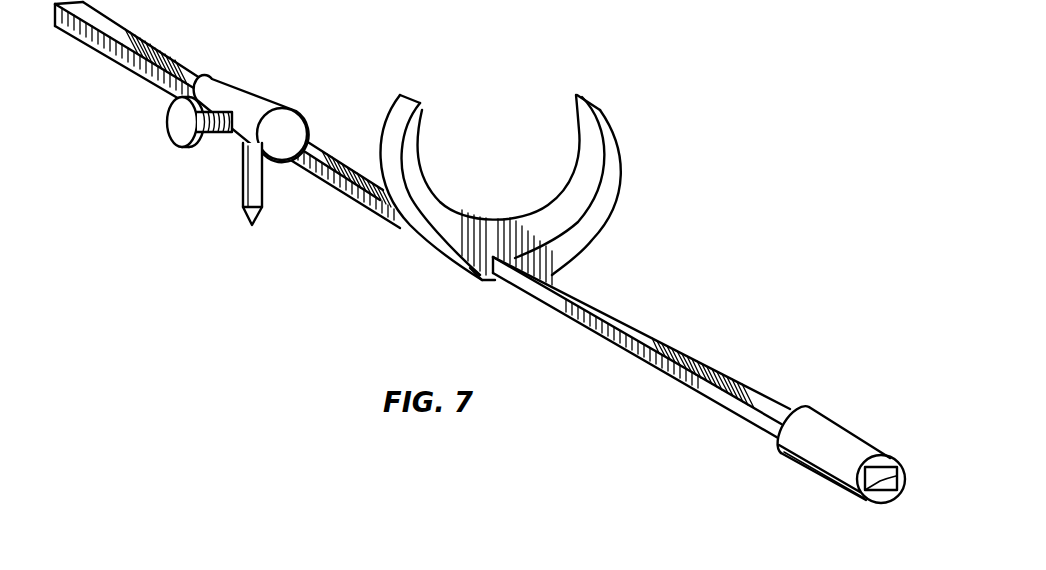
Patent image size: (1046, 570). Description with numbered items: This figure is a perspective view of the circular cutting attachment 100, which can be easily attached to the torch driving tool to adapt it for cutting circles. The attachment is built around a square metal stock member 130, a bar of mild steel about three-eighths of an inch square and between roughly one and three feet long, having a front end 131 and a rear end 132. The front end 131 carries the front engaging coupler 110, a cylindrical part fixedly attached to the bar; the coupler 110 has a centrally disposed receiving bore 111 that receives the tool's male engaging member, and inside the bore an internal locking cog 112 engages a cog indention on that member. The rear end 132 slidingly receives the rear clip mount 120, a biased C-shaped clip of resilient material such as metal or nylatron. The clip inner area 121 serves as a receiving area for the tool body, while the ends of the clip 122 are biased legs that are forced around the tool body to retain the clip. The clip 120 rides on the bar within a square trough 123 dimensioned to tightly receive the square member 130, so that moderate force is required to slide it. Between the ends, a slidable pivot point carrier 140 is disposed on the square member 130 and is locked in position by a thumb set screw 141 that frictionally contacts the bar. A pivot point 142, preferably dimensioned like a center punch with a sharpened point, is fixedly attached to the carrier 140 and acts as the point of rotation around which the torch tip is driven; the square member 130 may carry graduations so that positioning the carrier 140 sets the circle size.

The circular cutting attachment 100 is at (243, 322).
The front engaging coupler 110 is at (766, 472).
The receiving bore 111 is at (897, 478).
The internal locking cog 112 is at (872, 489).
The rear clip mount 120 is at (600, 229).
The clip inner area 121 is at (514, 174).
The ends of the clip 122 is at (576, 95).
The square trough 123 is at (480, 276).
The square metal stock member 130 is at (702, 397).
The front end 131 is at (851, 421).
The rear end 132 is at (128, 69).
The slidable pivot point carrier 140 is at (260, 93).
The thumb set screw 141 is at (167, 130).
The pivot point 142 is at (242, 196).